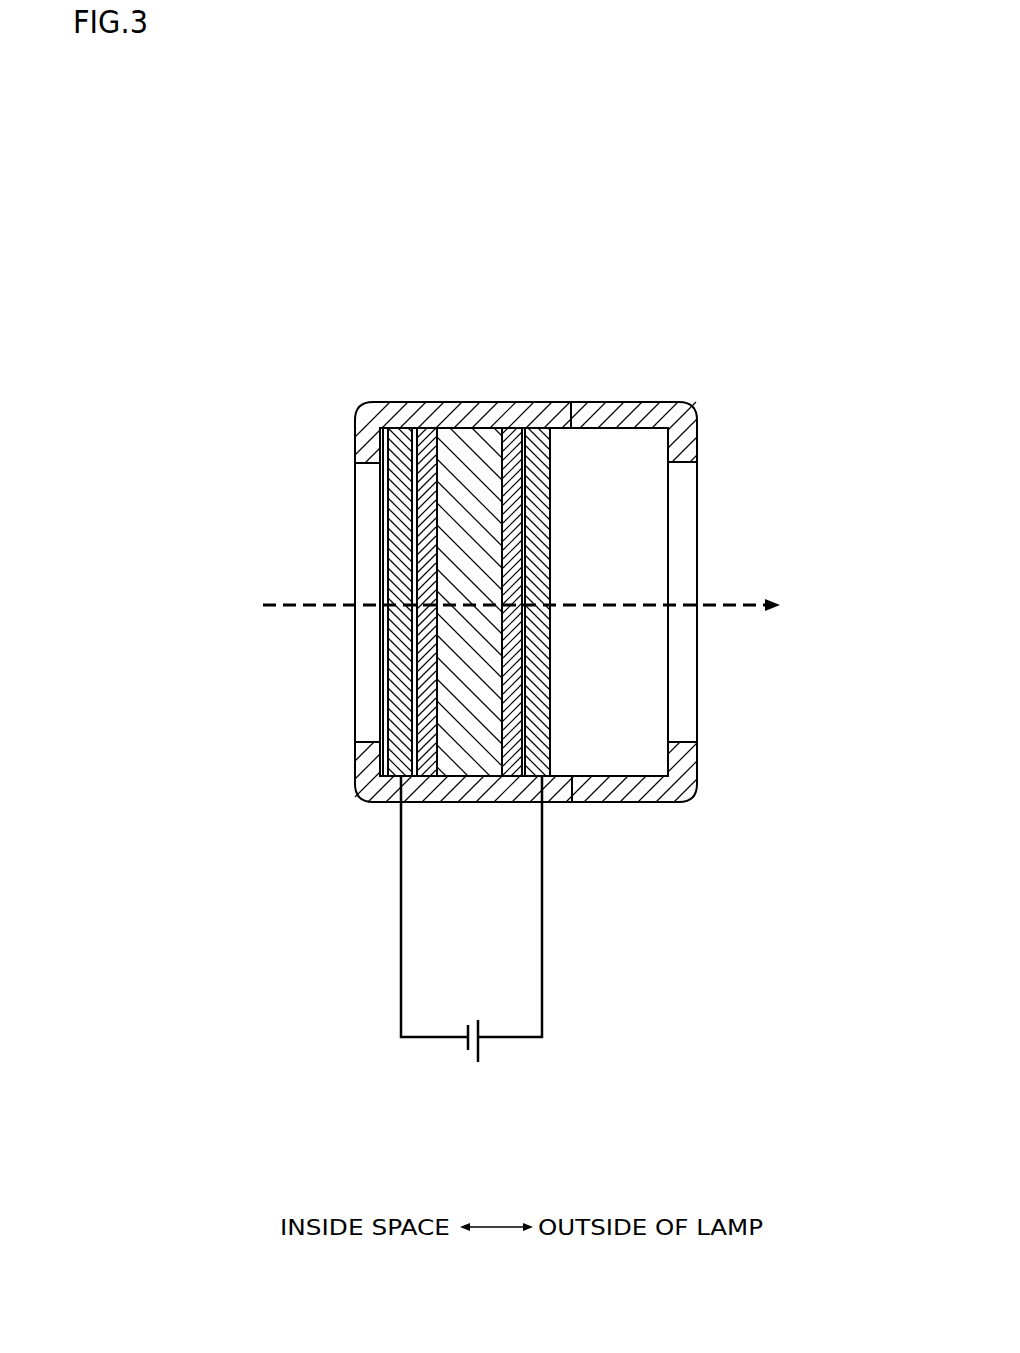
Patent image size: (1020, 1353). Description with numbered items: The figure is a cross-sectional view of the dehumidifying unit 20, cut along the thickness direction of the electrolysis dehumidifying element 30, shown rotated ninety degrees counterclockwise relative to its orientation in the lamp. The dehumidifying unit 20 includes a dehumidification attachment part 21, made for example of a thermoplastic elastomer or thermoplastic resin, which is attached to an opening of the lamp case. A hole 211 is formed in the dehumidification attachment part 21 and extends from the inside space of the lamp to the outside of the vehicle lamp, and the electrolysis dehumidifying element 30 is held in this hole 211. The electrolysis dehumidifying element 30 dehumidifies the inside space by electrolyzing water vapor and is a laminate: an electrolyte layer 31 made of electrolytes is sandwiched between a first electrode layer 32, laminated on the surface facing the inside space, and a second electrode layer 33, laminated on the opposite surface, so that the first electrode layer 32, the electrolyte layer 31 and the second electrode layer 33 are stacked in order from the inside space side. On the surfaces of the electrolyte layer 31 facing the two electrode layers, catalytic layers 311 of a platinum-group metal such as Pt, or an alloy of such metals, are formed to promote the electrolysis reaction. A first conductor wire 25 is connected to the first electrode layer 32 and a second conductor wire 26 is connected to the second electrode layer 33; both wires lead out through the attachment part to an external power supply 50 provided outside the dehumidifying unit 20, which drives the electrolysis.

The dehumidifying unit 20 is at (648, 186).
The dehumidification attachment part 21 is at (647, 402).
The hole 211 is at (650, 499).
The electrolysis dehumidifying element 30 is at (355, 491).
The electrolyte layer 31 is at (472, 435).
The catalytic layer 311 is at (427, 433).
The first electrode layer 32 is at (400, 435).
The second electrode layer 33 is at (540, 435).
The first conductor wire 25 is at (400, 883).
The second conductor wire 26 is at (542, 885).
The external power supply 50 is at (444, 1066).